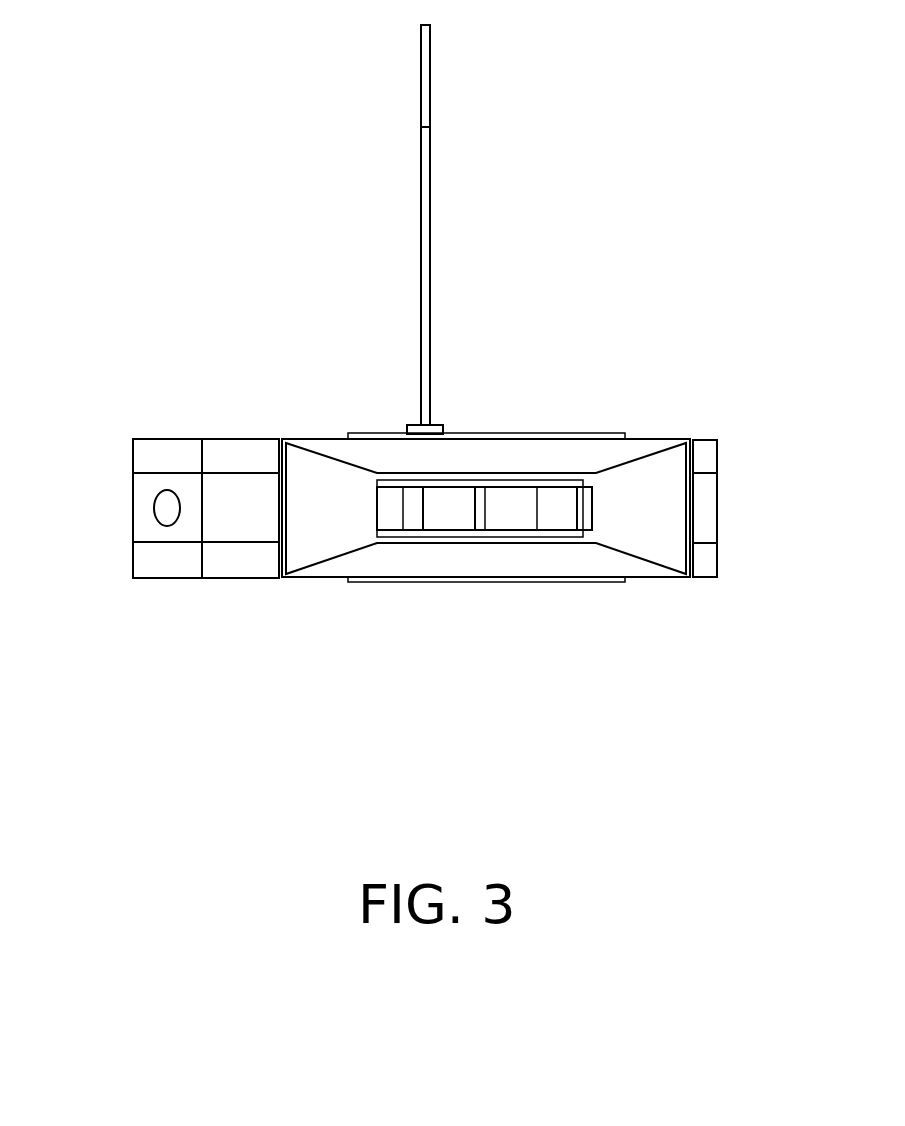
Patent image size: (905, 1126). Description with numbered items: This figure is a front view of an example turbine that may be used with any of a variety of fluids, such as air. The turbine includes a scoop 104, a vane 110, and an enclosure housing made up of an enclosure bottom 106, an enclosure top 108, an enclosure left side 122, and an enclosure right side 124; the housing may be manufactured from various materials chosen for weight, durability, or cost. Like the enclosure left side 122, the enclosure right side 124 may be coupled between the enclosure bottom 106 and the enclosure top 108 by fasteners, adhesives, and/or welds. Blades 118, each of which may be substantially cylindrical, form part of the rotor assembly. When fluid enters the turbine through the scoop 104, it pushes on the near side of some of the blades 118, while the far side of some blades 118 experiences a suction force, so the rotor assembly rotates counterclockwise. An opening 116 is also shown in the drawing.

The scoop 104 is at (700, 455).
The enclosure bottom 106 is at (715, 557).
The enclosure top 108 is at (168, 439).
The vane 110 is at (430, 153).
The aperture 116 is at (143, 508).
The blades 118 is at (453, 530).
The enclosure left side 122 is at (132, 482).
The enclosure right side 124 is at (715, 510).